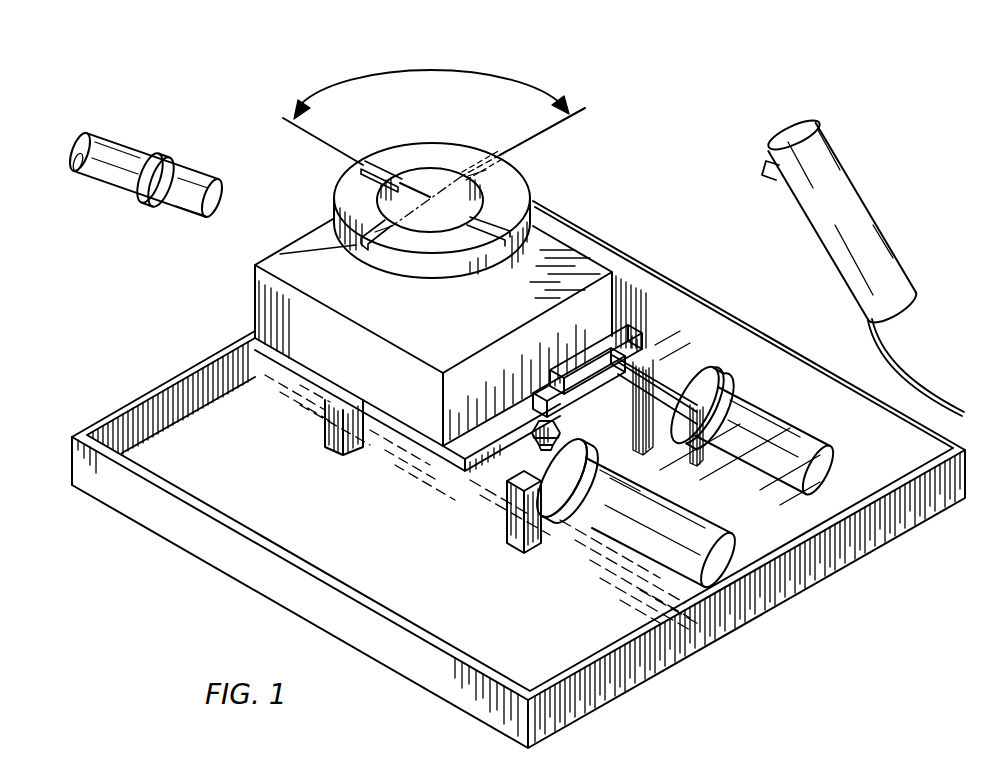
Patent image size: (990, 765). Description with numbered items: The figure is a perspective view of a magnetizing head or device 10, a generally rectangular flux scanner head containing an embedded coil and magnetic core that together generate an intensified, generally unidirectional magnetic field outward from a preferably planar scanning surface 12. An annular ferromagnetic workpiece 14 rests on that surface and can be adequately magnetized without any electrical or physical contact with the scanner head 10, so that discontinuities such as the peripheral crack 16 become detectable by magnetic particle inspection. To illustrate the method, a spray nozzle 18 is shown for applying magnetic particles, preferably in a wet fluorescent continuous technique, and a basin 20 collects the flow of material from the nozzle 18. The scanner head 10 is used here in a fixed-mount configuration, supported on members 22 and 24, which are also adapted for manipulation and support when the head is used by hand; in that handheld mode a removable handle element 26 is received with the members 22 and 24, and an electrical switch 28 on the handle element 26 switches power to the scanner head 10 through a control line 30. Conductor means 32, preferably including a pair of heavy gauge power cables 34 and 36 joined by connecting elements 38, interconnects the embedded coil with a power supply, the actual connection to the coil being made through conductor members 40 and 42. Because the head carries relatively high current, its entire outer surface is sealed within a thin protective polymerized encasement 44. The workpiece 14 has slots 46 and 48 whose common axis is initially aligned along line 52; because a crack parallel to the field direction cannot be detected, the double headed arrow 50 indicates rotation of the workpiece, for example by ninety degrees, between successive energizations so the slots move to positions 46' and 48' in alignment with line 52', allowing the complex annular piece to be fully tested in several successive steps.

The magnetizing head 10 is at (206, 314).
The scanning surface 12 is at (470, 307).
The workpiece 14 is at (528, 186).
The peripheral crack 16 is at (470, 262).
The spray nozzle 18 is at (190, 183).
The basin 20 is at (155, 505).
The support member 22 is at (352, 440).
The support member 24 is at (510, 521).
The handle element 26 is at (860, 218).
The electrical switch 28 is at (766, 178).
The control line 30 is at (896, 357).
The conductor means 32 is at (583, 541).
The power cable 34 is at (655, 503).
The power cable 36 is at (790, 447).
The connecting elements 38 is at (667, 349).
The conductor member 40 is at (461, 460).
The conductor member 42 is at (614, 342).
The polymerized encasement 44 is at (322, 366).
The slot 46 is at (382, 155).
The rotated slot position 46' is at (467, 149).
The slot 48 is at (492, 220).
The rotated slot position 48' is at (386, 253).
The double headed arrow 50 is at (456, 72).
The line 52 is at (343, 157).
The line 52' is at (432, 181).